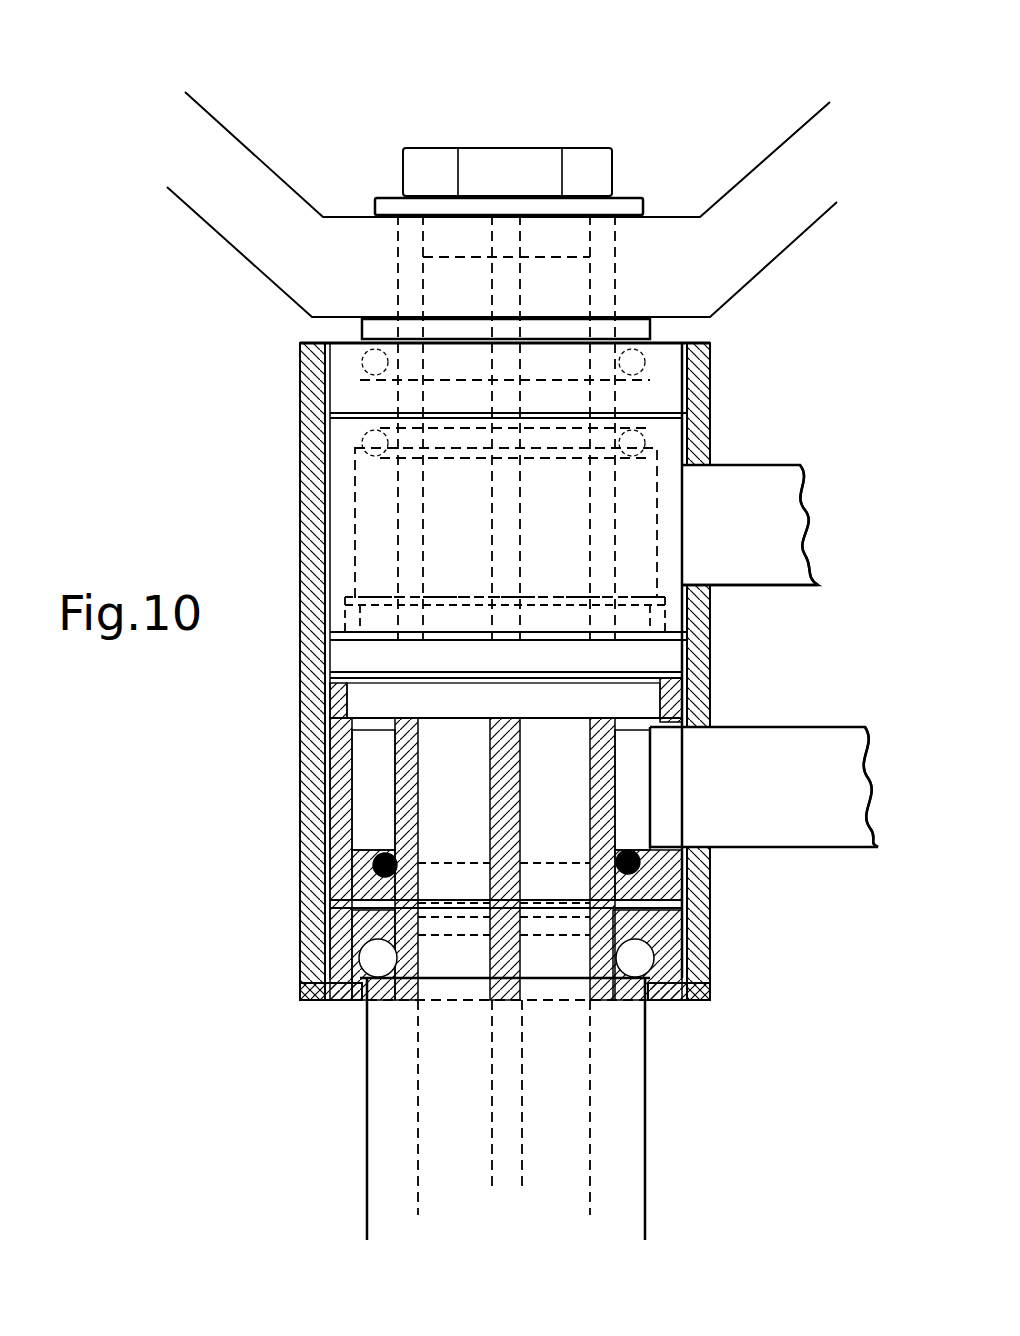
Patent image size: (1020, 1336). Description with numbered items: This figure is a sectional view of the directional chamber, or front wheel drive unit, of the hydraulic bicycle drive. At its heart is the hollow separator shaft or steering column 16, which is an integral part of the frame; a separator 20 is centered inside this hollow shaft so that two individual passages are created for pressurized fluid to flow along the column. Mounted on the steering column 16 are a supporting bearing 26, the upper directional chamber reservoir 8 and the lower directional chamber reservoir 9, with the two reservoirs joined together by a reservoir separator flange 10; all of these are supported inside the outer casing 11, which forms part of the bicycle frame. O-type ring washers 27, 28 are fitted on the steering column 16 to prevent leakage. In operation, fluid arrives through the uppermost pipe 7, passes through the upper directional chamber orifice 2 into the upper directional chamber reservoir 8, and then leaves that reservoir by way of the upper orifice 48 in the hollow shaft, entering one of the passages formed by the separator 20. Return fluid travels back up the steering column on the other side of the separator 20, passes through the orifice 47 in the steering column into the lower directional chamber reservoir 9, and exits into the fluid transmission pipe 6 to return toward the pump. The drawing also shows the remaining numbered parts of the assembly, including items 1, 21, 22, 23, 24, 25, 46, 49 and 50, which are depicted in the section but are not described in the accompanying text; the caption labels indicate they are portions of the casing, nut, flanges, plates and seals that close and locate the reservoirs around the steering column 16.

The first bar 1 is at (852, 782).
The upper directional chamber orifice 2 is at (820, 527).
The fluid transmission pipe 6 is at (765, 727).
The uppermost pipe 7 is at (782, 587).
The upper directional chamber reservoir 8 is at (340, 530).
The lower directional chamber reservoir 9 is at (337, 795).
The reservoir separator flange 10 is at (330, 655).
The outer casing 11 is at (300, 437).
The steering column 16 is at (410, 245).
The separator 20 is at (513, 283).
The nut 21 is at (497, 148).
The chute 22 is at (247, 143).
The flange 23 is at (645, 340).
The top plate 24 is at (332, 345).
The bearing 25 is at (330, 980).
The supporting bearing 26 is at (690, 1000).
The O-type ring washer 27 is at (625, 437).
The O-type ring washer 28 is at (650, 845).
The plate 46 is at (320, 908).
The orifice 47 is at (390, 760).
The upper orifice 48 is at (605, 493).
The plate 49 is at (705, 628).
The spacer 50 is at (700, 672).